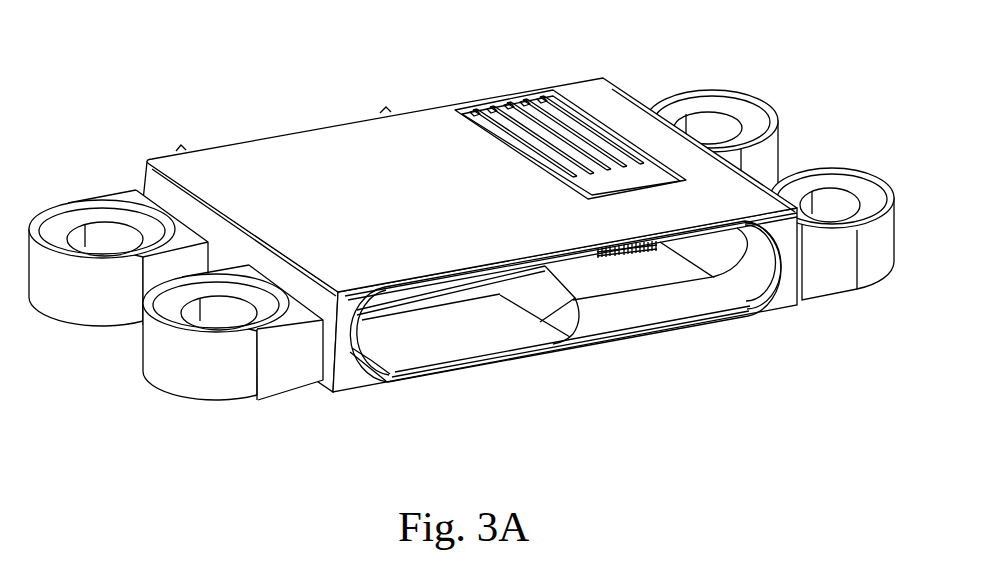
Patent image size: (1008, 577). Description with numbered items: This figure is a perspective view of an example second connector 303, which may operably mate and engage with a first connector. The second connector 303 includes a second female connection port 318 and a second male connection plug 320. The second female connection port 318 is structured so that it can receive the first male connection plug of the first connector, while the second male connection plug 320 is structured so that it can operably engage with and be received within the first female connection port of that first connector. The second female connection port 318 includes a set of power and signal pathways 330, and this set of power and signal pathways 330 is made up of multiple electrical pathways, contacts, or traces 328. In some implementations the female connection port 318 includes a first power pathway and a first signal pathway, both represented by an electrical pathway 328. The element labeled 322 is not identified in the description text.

The second connector 303 is at (461, 215).
The second female connection port 318 is at (703, 298).
The second male connection plug 320 is at (481, 326).
The top cover plate 322 is at (360, 186).
The electrical pathway 328 is at (625, 258).
The set of power and signal pathways 330 is at (590, 100).